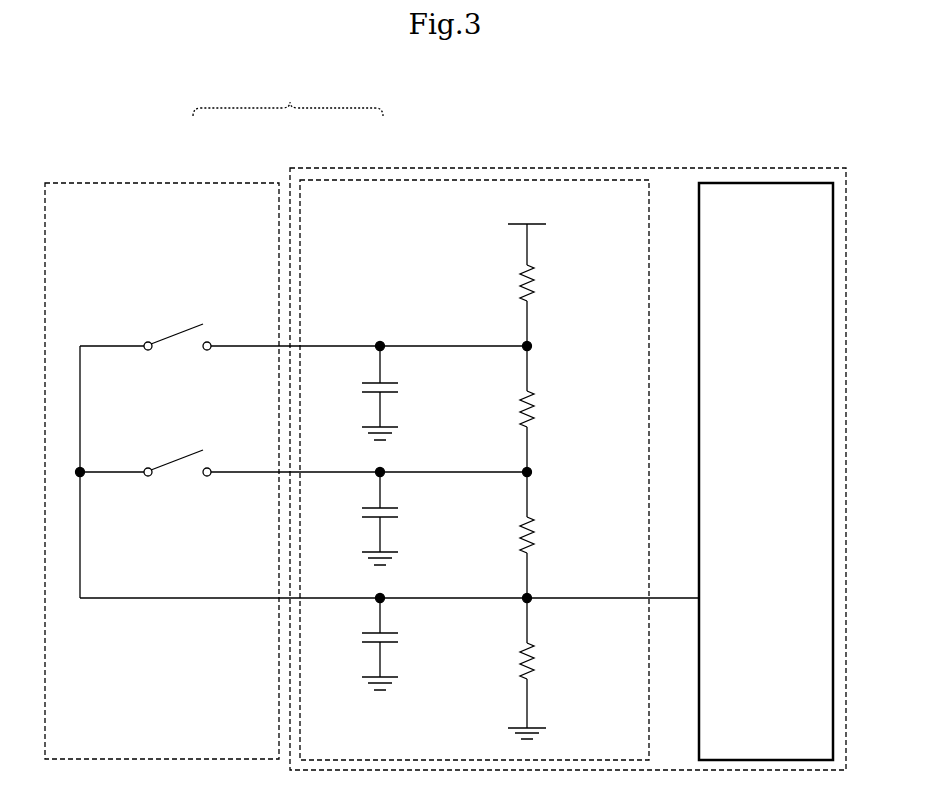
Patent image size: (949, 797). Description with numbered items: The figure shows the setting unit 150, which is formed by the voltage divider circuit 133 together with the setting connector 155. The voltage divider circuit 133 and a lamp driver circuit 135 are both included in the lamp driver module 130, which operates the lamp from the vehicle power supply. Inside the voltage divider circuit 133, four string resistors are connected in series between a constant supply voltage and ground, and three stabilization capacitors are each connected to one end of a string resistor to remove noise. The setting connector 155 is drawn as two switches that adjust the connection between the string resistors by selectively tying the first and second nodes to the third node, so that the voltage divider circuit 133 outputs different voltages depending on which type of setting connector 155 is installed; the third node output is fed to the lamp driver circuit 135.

The lamp driver module 130 is at (655, 168).
The voltage divider circuit 133 is at (380, 180).
The lamp driver circuit 135 is at (752, 183).
The setting unit 150 is at (288, 97).
The setting connector 155 is at (190, 183).